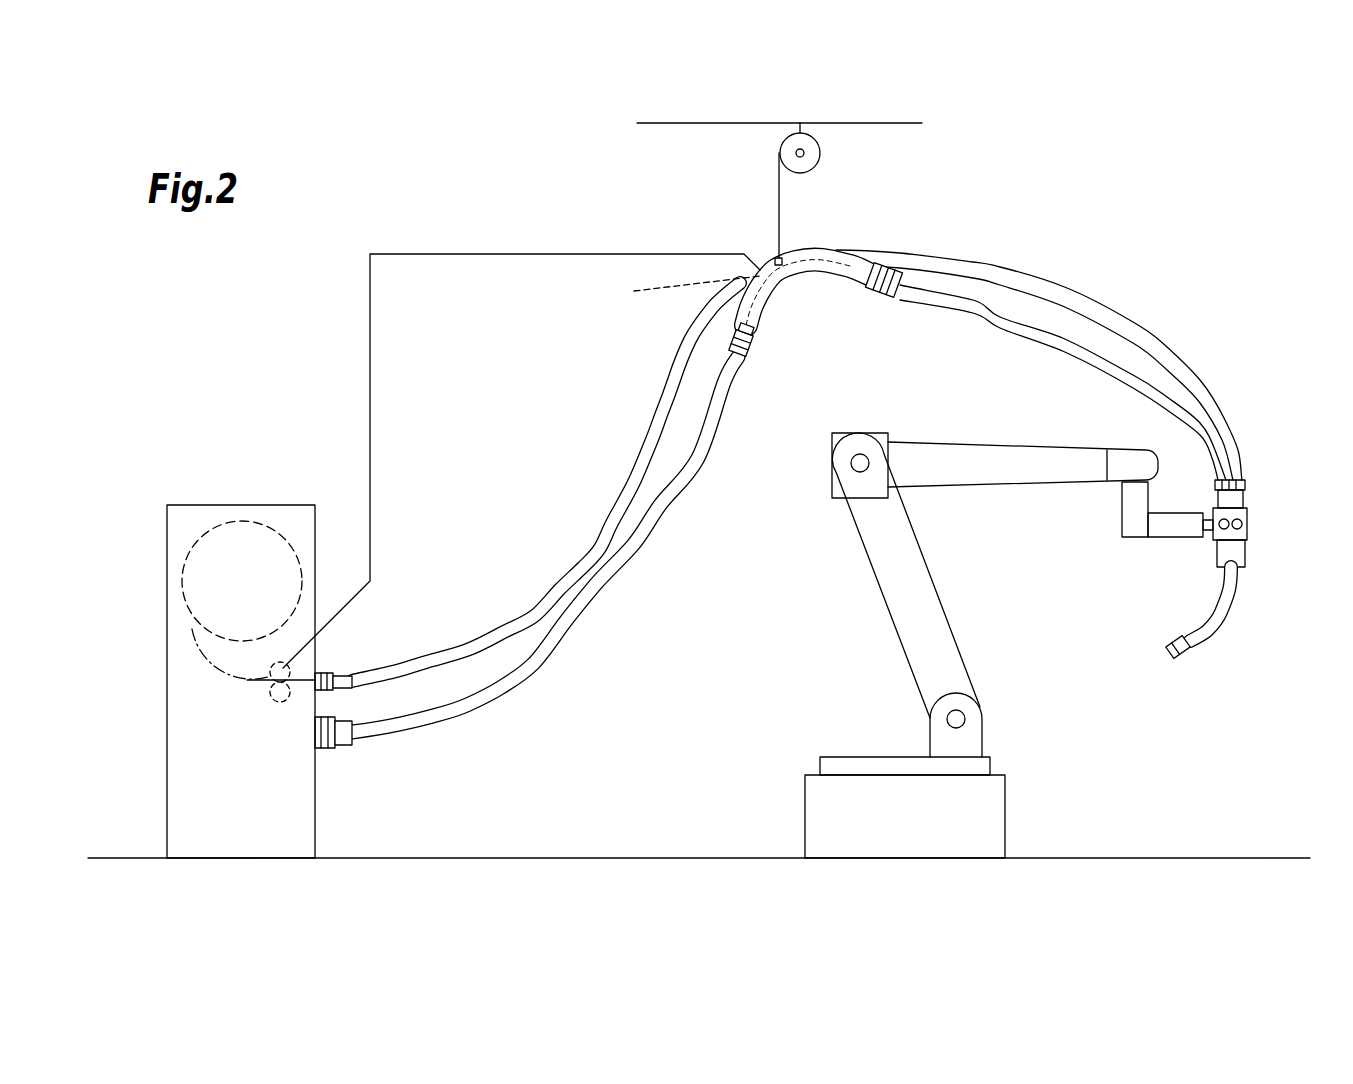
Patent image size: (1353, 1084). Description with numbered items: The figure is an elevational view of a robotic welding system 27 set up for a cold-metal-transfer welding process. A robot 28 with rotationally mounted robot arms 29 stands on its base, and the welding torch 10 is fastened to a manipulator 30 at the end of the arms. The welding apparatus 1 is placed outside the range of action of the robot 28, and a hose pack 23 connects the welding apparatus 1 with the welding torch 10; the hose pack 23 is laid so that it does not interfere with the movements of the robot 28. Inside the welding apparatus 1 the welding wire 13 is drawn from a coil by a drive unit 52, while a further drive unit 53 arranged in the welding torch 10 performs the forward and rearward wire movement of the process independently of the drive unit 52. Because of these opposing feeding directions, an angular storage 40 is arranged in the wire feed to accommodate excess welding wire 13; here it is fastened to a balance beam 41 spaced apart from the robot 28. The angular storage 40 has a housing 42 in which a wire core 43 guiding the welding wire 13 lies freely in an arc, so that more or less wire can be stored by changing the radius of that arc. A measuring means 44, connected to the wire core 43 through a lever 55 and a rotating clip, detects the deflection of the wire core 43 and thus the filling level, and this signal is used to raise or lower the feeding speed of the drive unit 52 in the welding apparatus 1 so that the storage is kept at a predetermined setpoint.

The welding apparatus 1 is at (199, 714).
The welding torch 10 is at (1242, 562).
The welding wire 13 is at (203, 650).
The hose pack 23 is at (1065, 297).
The robotic welding system 27 is at (1034, 483).
The robot 28 is at (865, 797).
The robot arm 29 is at (992, 465).
The manipulator 30 is at (1185, 520).
The angular storage 40 is at (726, 288).
The balance beam 41 is at (813, 153).
The housing 42 is at (800, 272).
The wire core 43 is at (832, 262).
The measuring means 44 is at (678, 295).
The drive unit 52 is at (283, 713).
The drive unit 53 is at (1248, 507).
The lever 55 is at (768, 266).